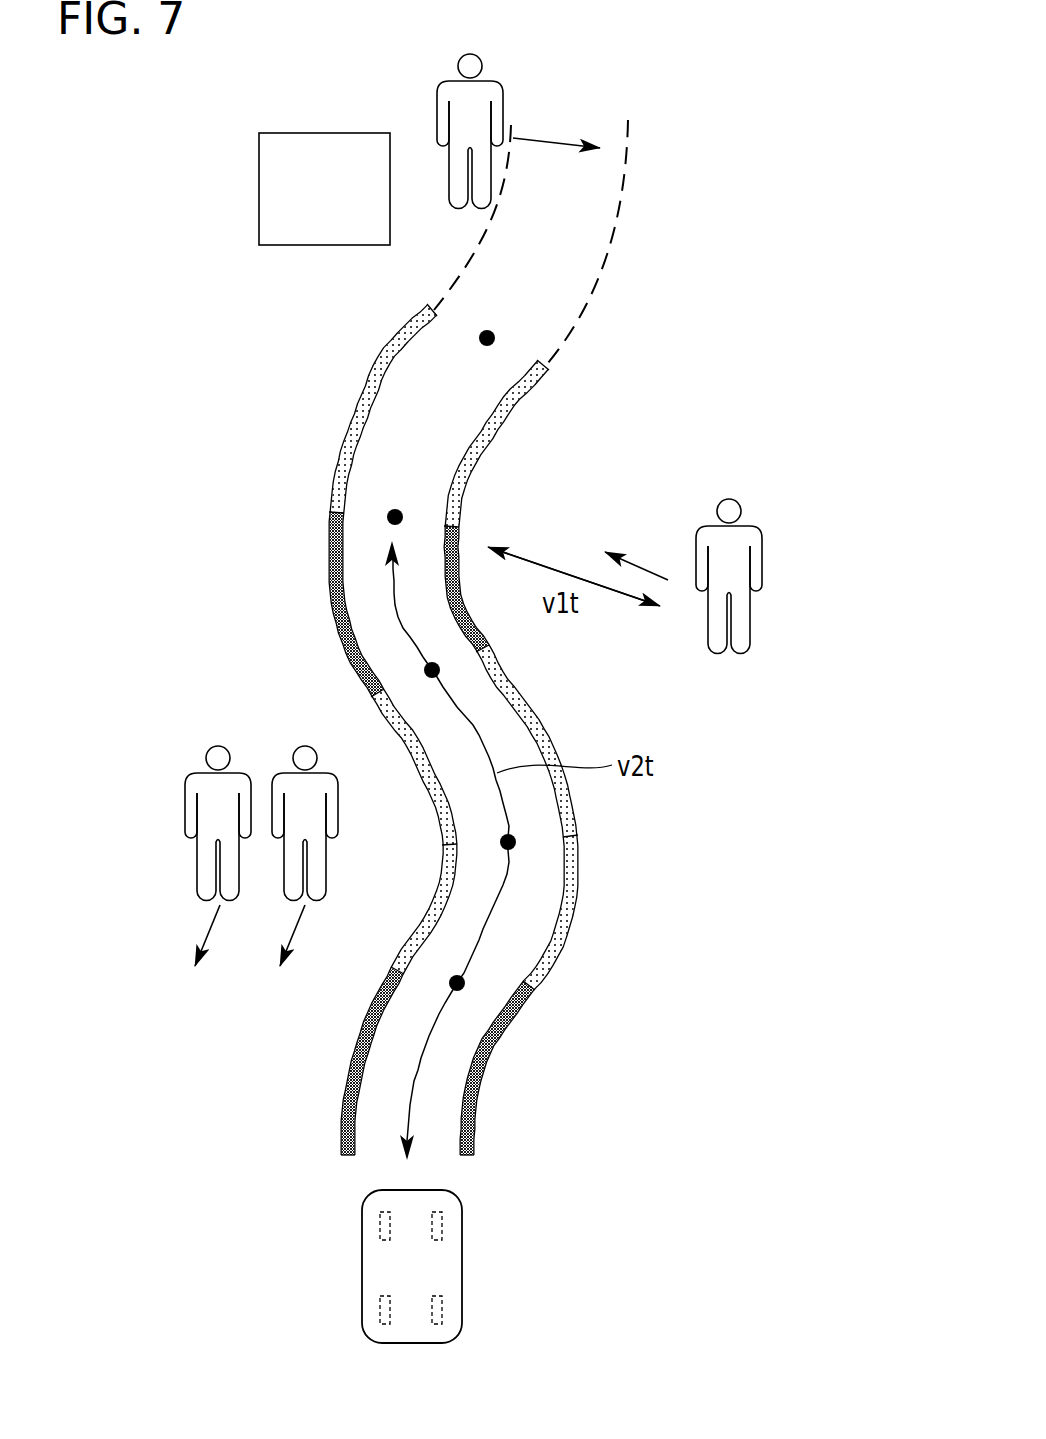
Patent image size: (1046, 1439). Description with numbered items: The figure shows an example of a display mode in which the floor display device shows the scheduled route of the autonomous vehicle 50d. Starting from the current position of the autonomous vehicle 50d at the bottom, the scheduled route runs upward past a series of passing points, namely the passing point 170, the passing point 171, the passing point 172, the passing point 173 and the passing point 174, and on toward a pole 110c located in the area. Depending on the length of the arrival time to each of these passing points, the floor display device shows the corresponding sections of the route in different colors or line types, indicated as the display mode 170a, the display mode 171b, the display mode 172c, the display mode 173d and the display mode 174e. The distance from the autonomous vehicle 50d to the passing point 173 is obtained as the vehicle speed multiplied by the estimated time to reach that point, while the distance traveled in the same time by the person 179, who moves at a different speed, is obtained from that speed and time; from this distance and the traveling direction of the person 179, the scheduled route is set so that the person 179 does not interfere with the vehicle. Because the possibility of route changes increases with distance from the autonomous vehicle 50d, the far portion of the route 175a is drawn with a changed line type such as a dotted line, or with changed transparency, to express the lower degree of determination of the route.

The pole 110c is at (258, 190).
The passing point 174 is at (480, 338).
The route section with changed line type or transparency 175a is at (612, 246).
The display mode of route section 174e is at (498, 432).
The passing point 173 is at (387, 517).
The display mode of route section 173d is at (333, 602).
The person 179 is at (762, 560).
The passing point 172 is at (424, 670).
The display mode of route section 172c is at (540, 702).
The passing point 171 is at (516, 840).
The display mode of route section 171b is at (575, 903).
The passing point 170 is at (465, 985).
The display mode of route section 170a is at (486, 1067).
The autonomous vehicle 50d is at (462, 1264).